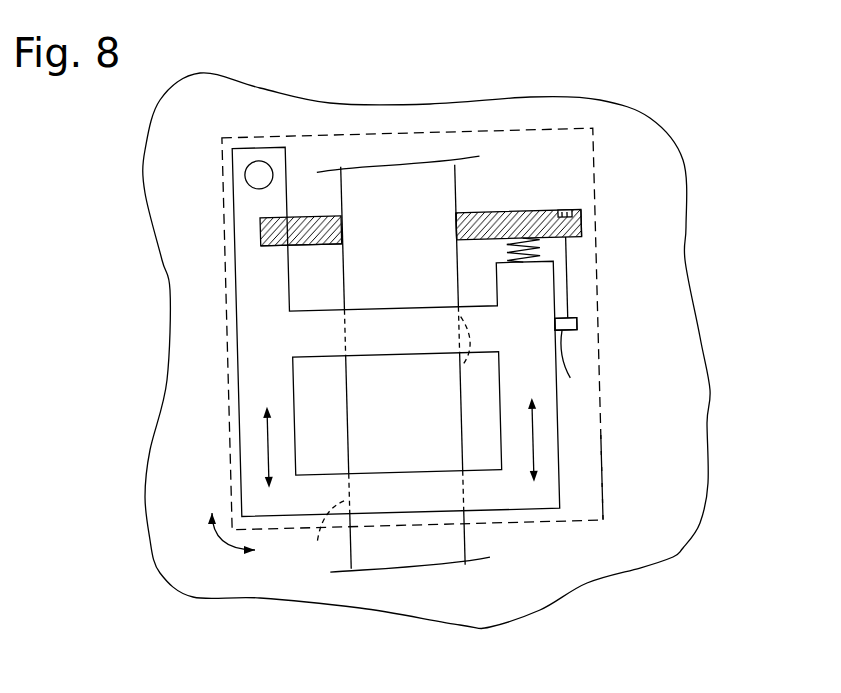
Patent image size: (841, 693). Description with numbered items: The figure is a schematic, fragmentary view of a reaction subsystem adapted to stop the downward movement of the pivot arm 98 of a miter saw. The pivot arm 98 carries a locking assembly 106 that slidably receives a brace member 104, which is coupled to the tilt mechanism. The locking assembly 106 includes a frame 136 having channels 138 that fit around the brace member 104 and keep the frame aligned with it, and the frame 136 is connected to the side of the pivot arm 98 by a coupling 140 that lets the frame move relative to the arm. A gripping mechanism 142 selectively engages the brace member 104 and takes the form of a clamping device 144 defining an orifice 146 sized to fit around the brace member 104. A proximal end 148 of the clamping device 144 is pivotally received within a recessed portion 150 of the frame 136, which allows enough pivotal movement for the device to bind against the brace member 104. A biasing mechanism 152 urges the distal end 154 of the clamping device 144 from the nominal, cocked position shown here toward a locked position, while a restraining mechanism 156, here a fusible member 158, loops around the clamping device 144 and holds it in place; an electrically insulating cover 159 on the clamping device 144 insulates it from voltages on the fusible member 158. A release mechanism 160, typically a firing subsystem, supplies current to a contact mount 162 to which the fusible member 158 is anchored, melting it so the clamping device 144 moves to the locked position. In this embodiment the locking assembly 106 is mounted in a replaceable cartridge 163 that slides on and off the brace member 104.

The pivot arm 98 is at (162, 545).
The brace member 104 is at (455, 547).
The locking assembly 106 is at (655, 150).
The frame 136 is at (252, 447).
The channels 138 is at (460, 370).
The coupling 140 is at (255, 173).
The gripping mechanism 142 is at (550, 148).
The clamping device 144 is at (503, 212).
The orifice 146 is at (458, 212).
The proximal end 148 is at (270, 248).
The recessed portion 150 is at (258, 233).
The biasing mechanism 152 is at (548, 252).
The distal end 154 is at (577, 213).
The restraining mechanism 156 is at (582, 295).
The fusible member 158 is at (570, 313).
The electrically insulating cover 159 is at (562, 210).
The release mechanism 160 is at (582, 337).
The contact mount 162 is at (578, 367).
The replaceable cartridge 163 is at (607, 478).